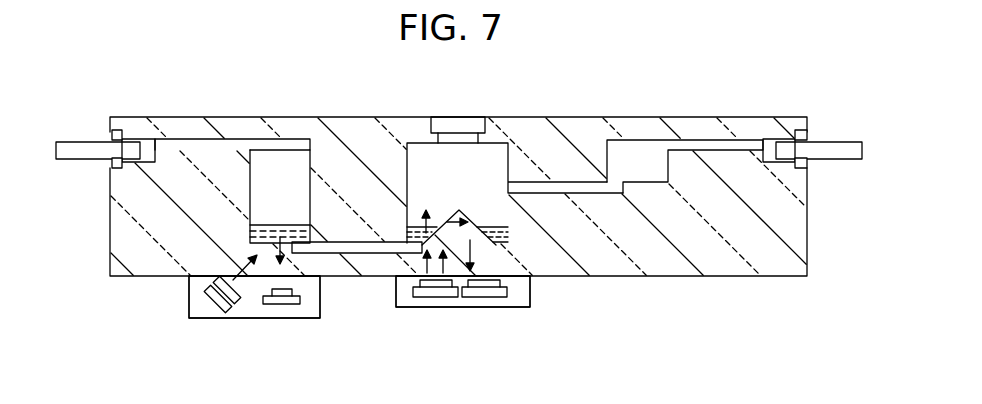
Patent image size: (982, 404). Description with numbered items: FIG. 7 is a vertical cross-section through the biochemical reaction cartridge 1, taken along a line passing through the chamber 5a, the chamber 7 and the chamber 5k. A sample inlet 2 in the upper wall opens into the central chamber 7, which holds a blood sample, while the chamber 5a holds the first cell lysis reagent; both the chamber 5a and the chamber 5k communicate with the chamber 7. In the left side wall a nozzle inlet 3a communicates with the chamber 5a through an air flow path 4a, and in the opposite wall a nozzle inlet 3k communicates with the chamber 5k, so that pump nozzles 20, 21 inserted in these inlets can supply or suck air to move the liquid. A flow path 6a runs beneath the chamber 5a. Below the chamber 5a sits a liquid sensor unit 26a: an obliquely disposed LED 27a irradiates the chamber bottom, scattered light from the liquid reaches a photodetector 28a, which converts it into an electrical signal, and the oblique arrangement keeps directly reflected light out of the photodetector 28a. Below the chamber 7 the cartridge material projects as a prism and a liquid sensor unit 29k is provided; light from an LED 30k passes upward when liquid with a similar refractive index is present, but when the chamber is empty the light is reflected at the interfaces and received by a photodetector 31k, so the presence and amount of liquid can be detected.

The biochemical reaction cartridge 1 is at (358, 126).
The sample inlet 2 is at (470, 120).
The nozzle inlet 3a is at (117, 131).
The nozzle inlet 3k is at (800, 131).
The air flow path 4a is at (195, 140).
The chamber 5a is at (290, 150).
The chamber 5k is at (642, 145).
The flow path 6a is at (360, 250).
The chamber 7 is at (497, 157).
The pump nozzle 20 is at (72, 142).
The pump nozzle 21 is at (837, 147).
The liquid sensor unit 26a is at (247, 301).
The LED 27a is at (222, 304).
The photodetector 28a is at (288, 304).
The liquid sensor unit 29k is at (458, 300).
The LED 30k is at (428, 293).
The photodetector 31k is at (490, 293).